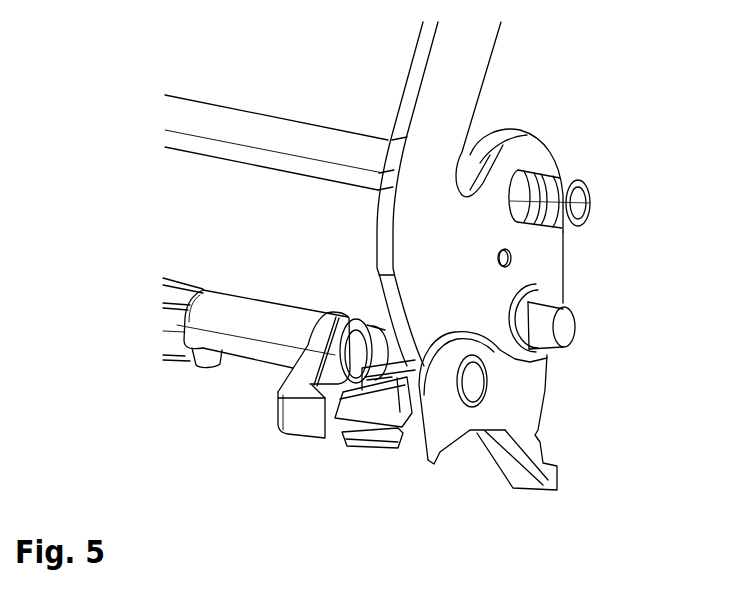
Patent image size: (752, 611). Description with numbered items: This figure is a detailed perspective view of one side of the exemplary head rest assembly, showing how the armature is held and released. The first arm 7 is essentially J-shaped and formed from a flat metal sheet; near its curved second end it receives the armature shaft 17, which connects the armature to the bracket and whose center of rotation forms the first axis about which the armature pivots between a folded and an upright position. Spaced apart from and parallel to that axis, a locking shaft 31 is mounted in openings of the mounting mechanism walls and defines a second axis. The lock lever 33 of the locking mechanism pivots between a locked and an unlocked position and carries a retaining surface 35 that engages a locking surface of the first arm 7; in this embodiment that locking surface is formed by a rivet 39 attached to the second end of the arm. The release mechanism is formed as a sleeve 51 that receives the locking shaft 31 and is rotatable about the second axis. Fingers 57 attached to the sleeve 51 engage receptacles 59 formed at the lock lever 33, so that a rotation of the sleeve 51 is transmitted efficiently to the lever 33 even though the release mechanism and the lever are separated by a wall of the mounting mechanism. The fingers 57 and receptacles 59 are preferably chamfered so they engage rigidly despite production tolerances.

The first arm 7 is at (464, 94).
The armature shaft 17 is at (302, 147).
The locking shaft 31 is at (383, 343).
The lock lever 33 is at (505, 402).
The retaining surface 35 is at (547, 404).
The rivet 39 is at (565, 328).
The sleeve 51 is at (192, 360).
The finger 57 is at (336, 432).
The receptacle 59 is at (392, 436).